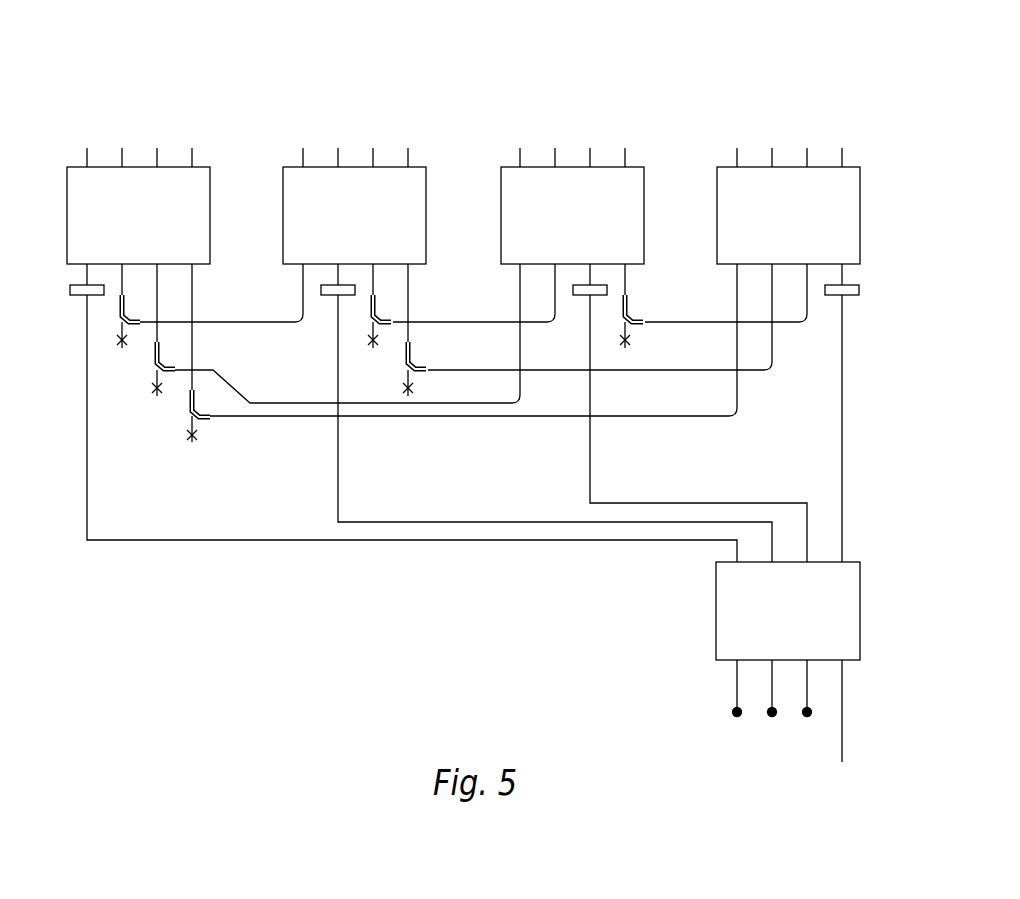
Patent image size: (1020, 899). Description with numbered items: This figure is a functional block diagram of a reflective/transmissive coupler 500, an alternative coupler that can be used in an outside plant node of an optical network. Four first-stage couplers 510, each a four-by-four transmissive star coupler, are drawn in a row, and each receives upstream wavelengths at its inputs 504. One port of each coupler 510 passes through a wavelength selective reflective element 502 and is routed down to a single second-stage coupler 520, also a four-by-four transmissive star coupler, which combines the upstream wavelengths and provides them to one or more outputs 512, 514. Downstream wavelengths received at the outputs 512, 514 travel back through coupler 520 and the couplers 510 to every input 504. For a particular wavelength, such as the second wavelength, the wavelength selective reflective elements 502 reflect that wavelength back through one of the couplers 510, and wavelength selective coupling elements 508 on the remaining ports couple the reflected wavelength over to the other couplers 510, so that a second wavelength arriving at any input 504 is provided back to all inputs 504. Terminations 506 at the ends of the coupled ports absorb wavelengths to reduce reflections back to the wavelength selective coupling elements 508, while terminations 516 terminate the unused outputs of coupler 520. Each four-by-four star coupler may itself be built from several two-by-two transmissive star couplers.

The reflective/transmissive coupler 500 is at (738, 56).
The wavelength selective reflective element 502 is at (70, 290).
The input 504 is at (192, 148).
The termination 506 is at (122, 348).
The wavelength selective coupling element 508 is at (127, 317).
The coupler 510 is at (67, 215).
The output 512 is at (842, 745).
The output 514 is at (807, 684).
The termination 516 is at (807, 716).
The coupler 520 is at (716, 611).